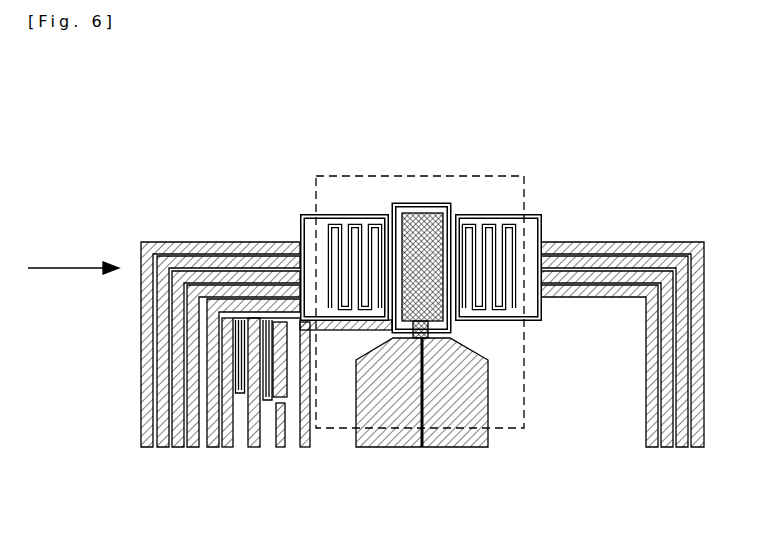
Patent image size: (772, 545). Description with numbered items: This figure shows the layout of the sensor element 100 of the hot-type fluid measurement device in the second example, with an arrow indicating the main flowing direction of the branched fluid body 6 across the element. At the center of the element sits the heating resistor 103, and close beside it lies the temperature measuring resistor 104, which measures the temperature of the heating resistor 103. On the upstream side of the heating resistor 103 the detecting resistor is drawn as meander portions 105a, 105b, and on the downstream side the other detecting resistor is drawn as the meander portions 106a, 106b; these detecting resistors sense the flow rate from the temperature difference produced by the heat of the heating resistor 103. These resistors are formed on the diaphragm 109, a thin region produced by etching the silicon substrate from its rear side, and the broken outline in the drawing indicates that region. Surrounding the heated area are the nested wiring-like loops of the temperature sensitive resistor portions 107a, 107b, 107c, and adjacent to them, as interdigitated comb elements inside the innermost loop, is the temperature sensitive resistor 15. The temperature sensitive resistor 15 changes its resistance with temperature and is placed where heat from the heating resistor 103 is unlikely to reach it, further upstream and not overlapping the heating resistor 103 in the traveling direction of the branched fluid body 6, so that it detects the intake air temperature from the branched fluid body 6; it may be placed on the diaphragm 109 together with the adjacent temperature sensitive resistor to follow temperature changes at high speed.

The sensor element 100 is at (213, 167).
The heating resistor 103 is at (423, 204).
The temperature measuring resistor 104 is at (418, 217).
The source electrode 105a is at (327, 209).
The source electrode portion 105b is at (380, 216).
The drain electrode 106a is at (517, 210).
The drain electrode portion 106b is at (495, 216).
The first wiring layer 107a is at (278, 240).
The second wiring layer 107b is at (237, 241).
The third wiring layer 107c is at (198, 242).
The diaphragm 109 is at (622, 344).
The temperature sensitive resistor 15 is at (239, 397).
The branched fluid body 6 is at (73, 273).